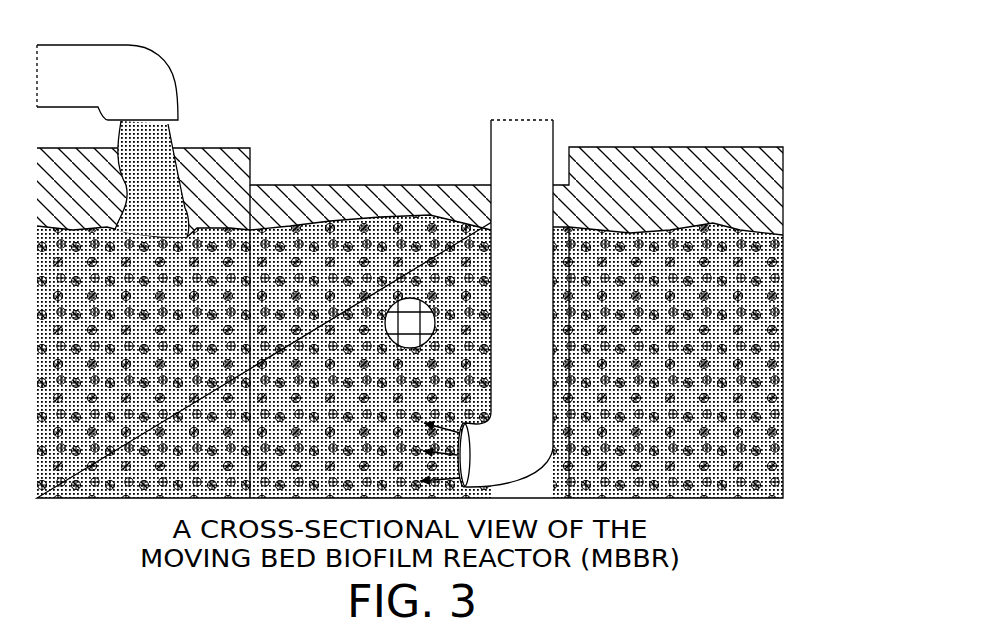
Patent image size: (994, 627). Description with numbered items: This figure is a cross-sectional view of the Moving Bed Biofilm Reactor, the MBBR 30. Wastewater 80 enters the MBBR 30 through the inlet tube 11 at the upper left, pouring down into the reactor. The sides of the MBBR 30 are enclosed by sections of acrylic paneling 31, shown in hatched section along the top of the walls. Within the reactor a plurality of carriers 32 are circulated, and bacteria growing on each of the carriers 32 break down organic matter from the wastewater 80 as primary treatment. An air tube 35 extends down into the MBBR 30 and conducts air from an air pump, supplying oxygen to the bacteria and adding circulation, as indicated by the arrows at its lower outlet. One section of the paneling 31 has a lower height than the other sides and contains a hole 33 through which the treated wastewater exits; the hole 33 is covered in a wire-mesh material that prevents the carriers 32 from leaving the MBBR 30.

The inlet tube 11 is at (157, 58).
The wastewater 80 is at (162, 137).
The Moving Bed Biofilm Reactor (MBBR) 30 is at (484, 74).
The acrylic paneling 31 is at (467, 211).
The carriers 32 is at (770, 317).
The hole 33 is at (386, 322).
The air tube 35 is at (513, 270).